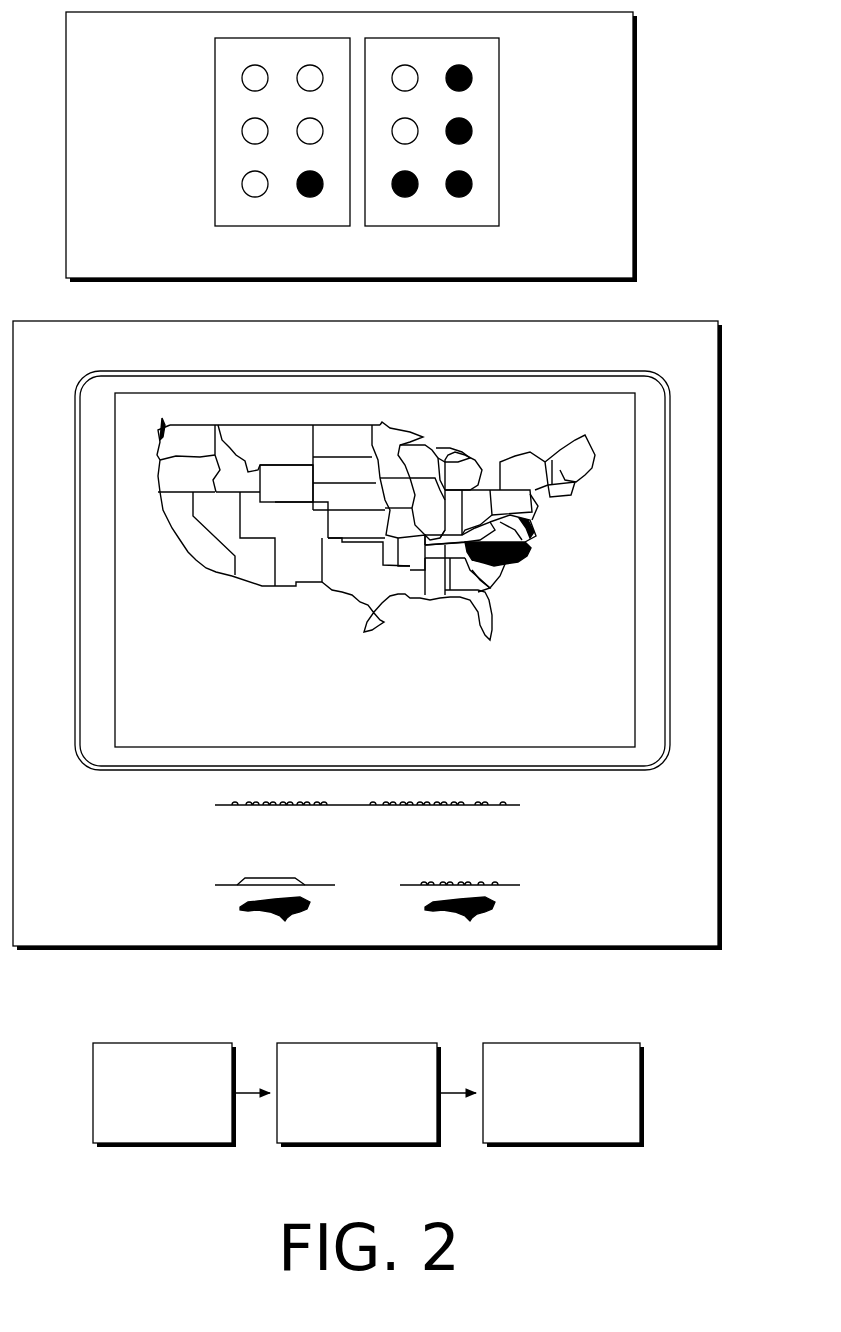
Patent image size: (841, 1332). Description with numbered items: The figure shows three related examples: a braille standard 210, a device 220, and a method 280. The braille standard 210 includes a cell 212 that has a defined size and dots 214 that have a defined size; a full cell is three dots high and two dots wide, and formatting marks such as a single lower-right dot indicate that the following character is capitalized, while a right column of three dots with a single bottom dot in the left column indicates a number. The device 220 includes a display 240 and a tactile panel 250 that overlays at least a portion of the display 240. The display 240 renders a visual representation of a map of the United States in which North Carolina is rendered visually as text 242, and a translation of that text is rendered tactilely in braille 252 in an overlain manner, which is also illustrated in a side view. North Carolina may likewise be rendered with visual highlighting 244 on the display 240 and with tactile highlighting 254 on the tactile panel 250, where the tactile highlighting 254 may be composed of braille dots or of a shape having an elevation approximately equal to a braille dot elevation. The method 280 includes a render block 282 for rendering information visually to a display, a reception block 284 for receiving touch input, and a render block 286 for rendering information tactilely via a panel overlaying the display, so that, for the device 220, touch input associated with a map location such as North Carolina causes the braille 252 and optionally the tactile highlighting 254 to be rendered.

The braille standard 210 is at (148, 45).
The cell 212 is at (215, 128).
The dots 214 is at (468, 72).
The device 220 is at (148, 368).
The display 240 is at (507, 408).
The text 242 is at (524, 670).
The visual highlighting 244 is at (528, 578).
The tactile panel 250 is at (203, 727).
The braille 252 is at (552, 804).
The tactile highlighting 254 is at (553, 871).
The method 280 is at (420, 1021).
The render block 282 is at (179, 1129).
The reception block 284 is at (374, 1129).
The render block 286 is at (578, 1129).